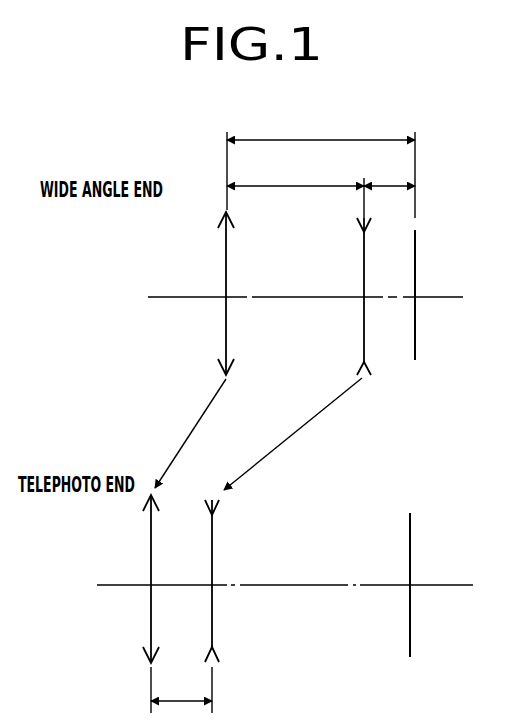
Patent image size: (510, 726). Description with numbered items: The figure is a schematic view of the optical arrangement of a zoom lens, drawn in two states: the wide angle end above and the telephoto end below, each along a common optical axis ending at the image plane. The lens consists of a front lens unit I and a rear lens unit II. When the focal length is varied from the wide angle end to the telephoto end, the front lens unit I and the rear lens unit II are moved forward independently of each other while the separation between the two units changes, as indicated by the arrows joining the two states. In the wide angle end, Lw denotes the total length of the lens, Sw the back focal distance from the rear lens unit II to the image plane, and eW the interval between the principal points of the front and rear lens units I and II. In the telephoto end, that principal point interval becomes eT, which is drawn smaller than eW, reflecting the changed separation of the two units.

The front lens unit I is at (225, 247).
The rear lens unit II is at (364, 251).
The total length of the lens in the wide angle end Lw is at (321, 127).
The interval between the principal points in the wide angle end eW is at (295, 174).
The back focal distance Sw is at (389, 174).
The interval between the principal points in the telephoto end eT is at (181, 690).